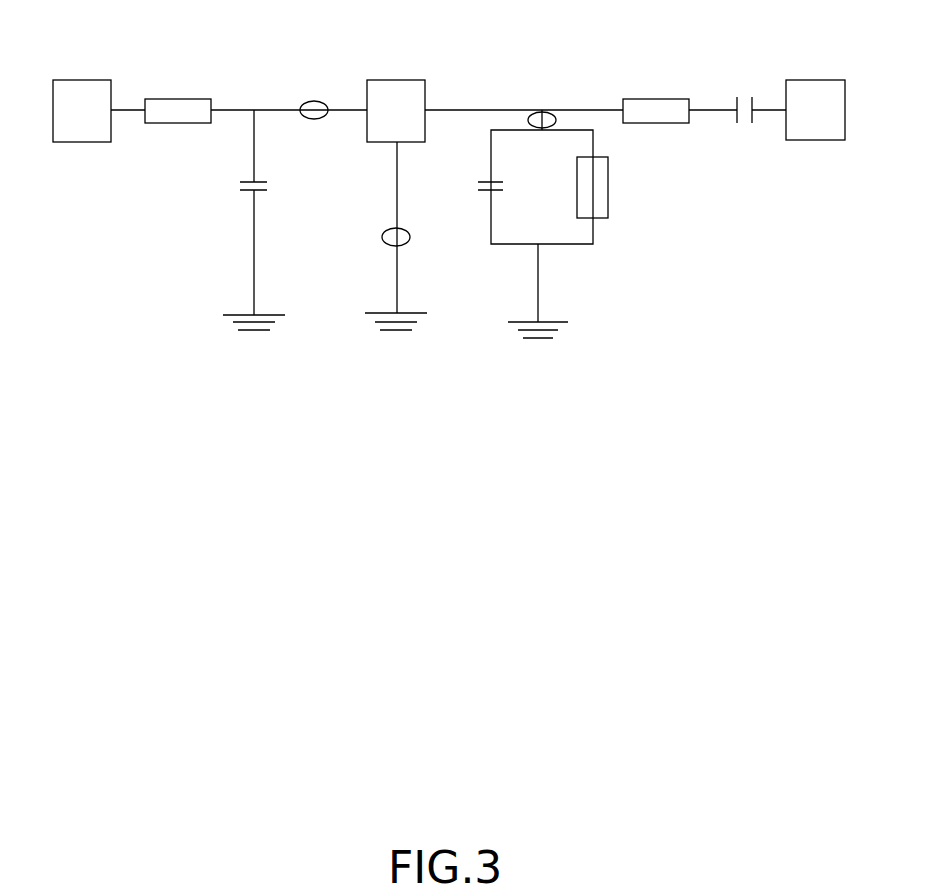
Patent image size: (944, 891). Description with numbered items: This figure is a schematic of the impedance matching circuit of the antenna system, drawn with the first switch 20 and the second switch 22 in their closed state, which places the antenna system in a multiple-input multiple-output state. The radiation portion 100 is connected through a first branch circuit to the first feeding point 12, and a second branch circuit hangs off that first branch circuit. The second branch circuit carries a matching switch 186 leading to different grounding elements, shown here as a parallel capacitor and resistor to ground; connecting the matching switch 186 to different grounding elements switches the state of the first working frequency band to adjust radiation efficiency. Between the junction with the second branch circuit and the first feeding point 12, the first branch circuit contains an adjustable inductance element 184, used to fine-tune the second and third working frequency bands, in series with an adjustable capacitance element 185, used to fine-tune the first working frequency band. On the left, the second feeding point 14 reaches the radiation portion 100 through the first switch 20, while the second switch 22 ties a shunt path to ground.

The second feeding point 14 is at (82, 122).
The first switch 20 is at (314, 100).
The radiation portion 100 is at (396, 107).
The second switch 22 is at (381, 237).
The matching switch 186 is at (538, 112).
The adjustable inductance element 184 is at (657, 97).
The adjustable capacitance element 185 is at (750, 97).
The first feeding point 12 is at (817, 123).